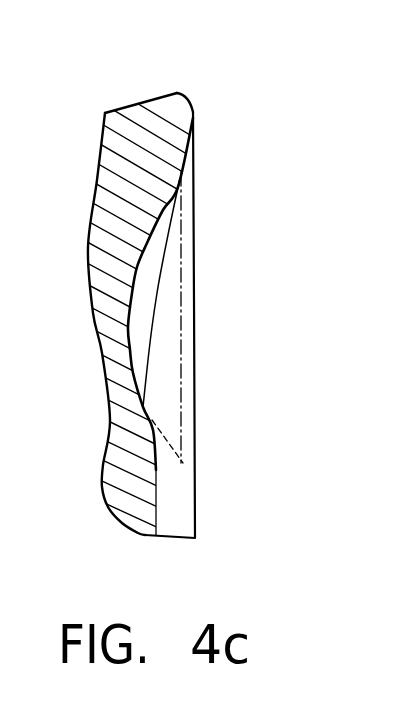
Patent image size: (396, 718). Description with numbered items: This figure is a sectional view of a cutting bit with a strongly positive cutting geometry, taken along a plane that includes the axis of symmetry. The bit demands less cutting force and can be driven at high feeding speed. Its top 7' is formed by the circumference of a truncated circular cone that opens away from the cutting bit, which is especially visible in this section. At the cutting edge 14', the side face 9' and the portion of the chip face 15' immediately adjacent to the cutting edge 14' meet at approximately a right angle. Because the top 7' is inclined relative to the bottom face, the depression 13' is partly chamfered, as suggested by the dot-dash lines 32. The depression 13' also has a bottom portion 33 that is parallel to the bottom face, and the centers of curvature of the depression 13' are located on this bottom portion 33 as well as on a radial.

The side face 9' is at (140, 316).
The cutting edge 14' is at (170, 77).
The chip face 15' is at (220, 91).
The top 7' is at (195, 325).
The bottom portion 33 is at (128, 345).
The depression 13' is at (203, 292).
The dot-dash lines 32 is at (181, 402).